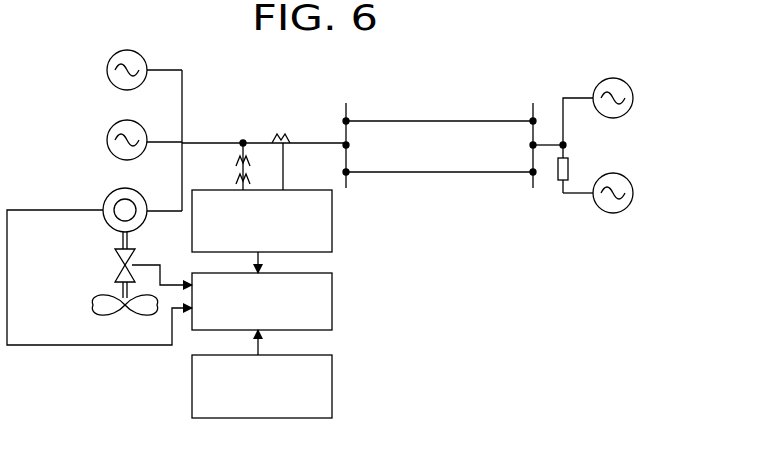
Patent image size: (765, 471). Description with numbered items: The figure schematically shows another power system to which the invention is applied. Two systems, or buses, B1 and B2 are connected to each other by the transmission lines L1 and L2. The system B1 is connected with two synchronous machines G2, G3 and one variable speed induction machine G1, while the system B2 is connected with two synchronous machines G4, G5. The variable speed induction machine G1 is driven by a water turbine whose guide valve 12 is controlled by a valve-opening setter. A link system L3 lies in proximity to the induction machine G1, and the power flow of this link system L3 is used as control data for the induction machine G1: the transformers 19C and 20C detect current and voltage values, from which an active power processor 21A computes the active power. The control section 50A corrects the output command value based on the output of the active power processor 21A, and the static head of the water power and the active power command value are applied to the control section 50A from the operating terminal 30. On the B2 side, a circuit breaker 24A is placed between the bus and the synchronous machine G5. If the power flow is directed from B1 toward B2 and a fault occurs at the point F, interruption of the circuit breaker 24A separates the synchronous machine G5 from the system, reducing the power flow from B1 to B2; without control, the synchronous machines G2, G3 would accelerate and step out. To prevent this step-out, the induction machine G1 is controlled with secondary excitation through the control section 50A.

The variable speed induction machine G1 is at (106, 194).
The synchronous machine G2 is at (108, 140).
The synchronous machine G3 is at (108, 70).
The synchronous machine G4 is at (636, 72).
The synchronous machine G5 is at (614, 212).
The guide valve 12 is at (115, 278).
The transformer 20C is at (232, 152).
The transformer 19C is at (300, 112).
The transmission line L1 is at (464, 172).
The transmission line L2 is at (418, 121).
The link system L3 is at (262, 142).
The system B1 is at (351, 131).
The system B2 is at (536, 131).
The active power processor 21A is at (332, 222).
The control section 50A is at (332, 302).
The operating terminal 30 is at (332, 381).
The circuit breaker 24A is at (568, 168).
The fault point F is at (588, 180).